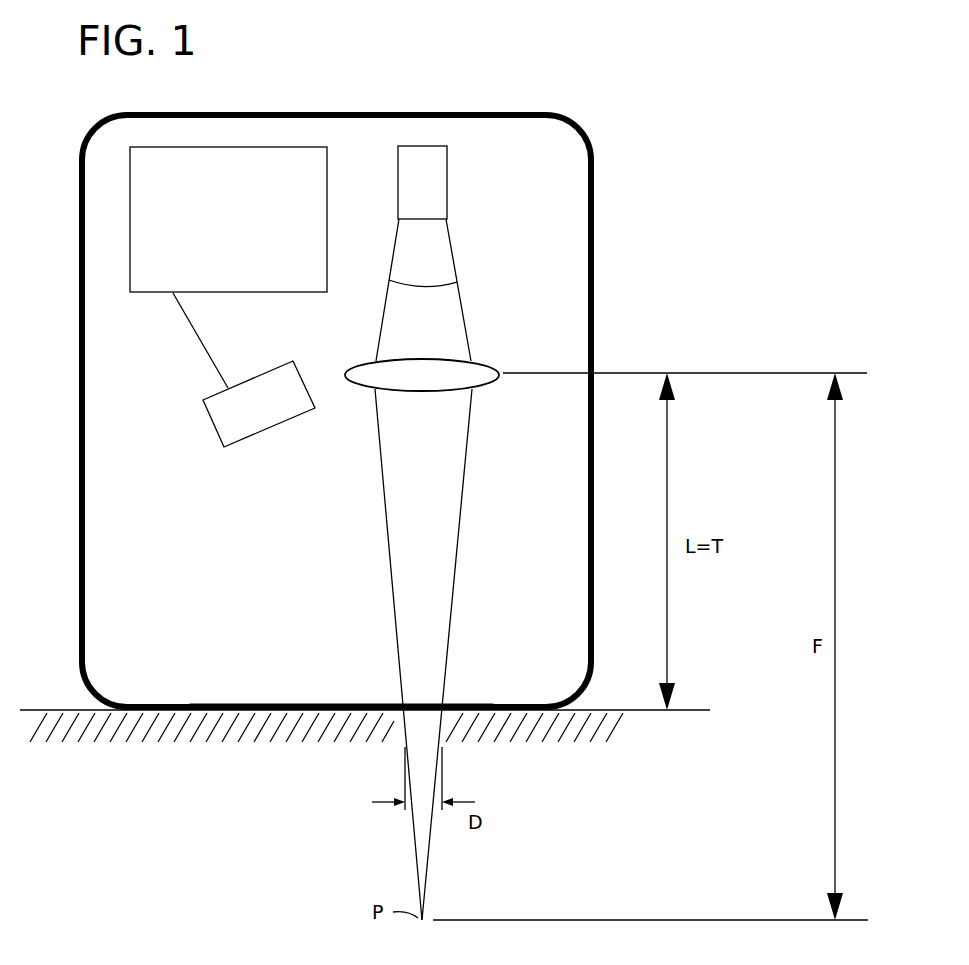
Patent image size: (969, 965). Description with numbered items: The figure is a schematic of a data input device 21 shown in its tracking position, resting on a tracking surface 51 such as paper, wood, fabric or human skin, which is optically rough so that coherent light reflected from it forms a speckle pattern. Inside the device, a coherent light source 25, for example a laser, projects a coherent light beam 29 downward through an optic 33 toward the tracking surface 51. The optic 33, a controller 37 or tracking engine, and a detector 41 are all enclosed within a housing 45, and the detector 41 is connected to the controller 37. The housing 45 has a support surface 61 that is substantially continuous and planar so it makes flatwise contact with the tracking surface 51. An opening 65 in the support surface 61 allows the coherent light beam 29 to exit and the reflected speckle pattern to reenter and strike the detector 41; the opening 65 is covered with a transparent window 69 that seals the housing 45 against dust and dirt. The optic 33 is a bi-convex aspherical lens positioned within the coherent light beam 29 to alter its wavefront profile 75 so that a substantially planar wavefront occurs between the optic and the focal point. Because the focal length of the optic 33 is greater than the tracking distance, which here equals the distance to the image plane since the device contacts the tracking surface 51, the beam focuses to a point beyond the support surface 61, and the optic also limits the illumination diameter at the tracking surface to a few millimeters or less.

The data input device 21 is at (645, 211).
The coherent light source 25 is at (422, 182).
The coherent light beam 29 is at (458, 243).
The optic 33 is at (422, 375).
The controller 37 is at (228, 219).
The detector 41 is at (259, 404).
The housing 45 is at (595, 317).
The tracking surface 51 is at (700, 708).
The support surface 61 is at (533, 714).
The opening 65 is at (493, 704).
The transparent window 69 is at (278, 702).
The wavefront profile 75 is at (445, 284).